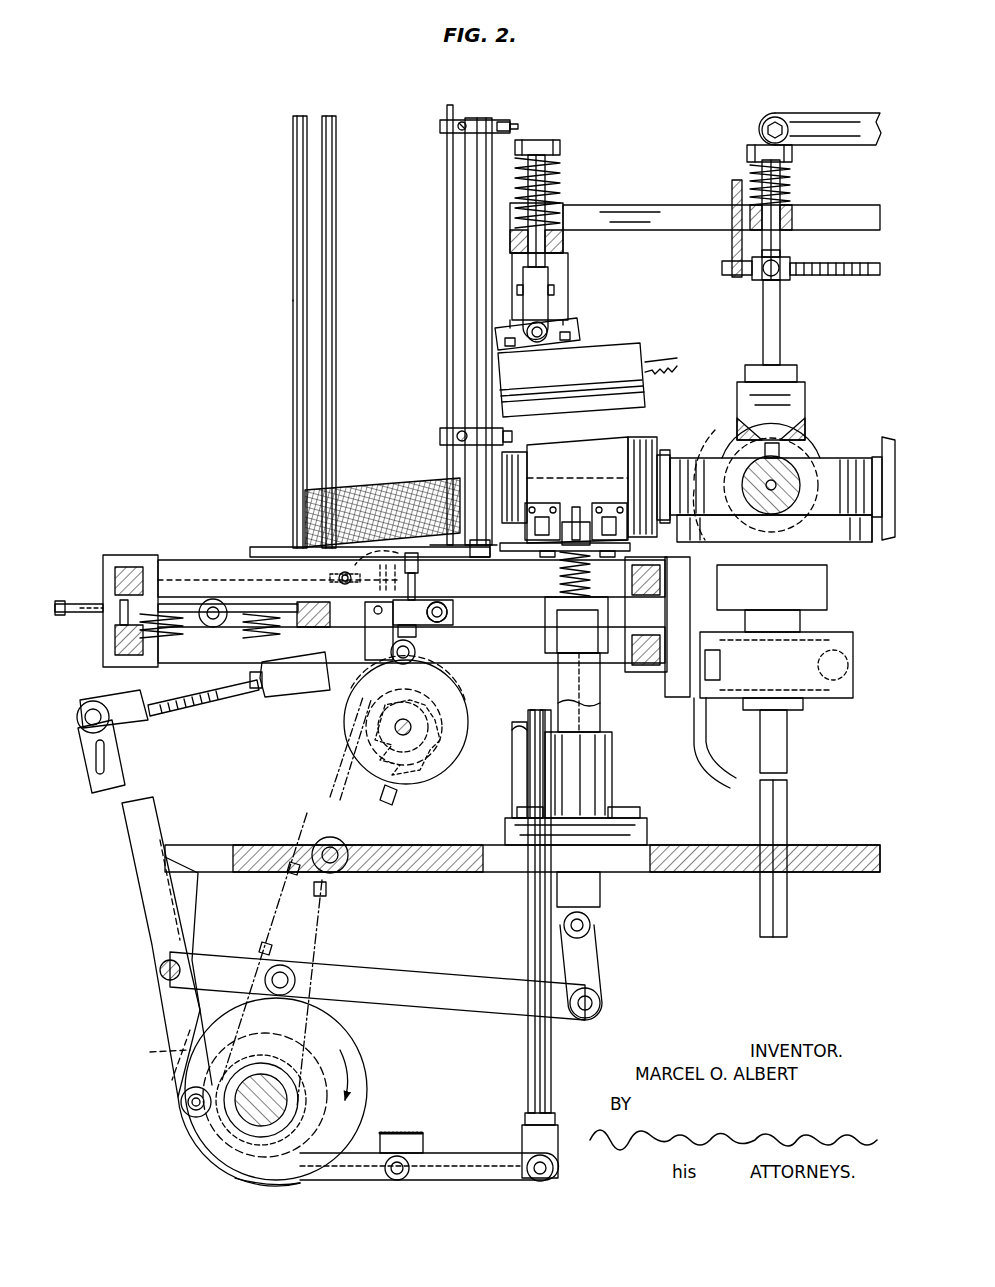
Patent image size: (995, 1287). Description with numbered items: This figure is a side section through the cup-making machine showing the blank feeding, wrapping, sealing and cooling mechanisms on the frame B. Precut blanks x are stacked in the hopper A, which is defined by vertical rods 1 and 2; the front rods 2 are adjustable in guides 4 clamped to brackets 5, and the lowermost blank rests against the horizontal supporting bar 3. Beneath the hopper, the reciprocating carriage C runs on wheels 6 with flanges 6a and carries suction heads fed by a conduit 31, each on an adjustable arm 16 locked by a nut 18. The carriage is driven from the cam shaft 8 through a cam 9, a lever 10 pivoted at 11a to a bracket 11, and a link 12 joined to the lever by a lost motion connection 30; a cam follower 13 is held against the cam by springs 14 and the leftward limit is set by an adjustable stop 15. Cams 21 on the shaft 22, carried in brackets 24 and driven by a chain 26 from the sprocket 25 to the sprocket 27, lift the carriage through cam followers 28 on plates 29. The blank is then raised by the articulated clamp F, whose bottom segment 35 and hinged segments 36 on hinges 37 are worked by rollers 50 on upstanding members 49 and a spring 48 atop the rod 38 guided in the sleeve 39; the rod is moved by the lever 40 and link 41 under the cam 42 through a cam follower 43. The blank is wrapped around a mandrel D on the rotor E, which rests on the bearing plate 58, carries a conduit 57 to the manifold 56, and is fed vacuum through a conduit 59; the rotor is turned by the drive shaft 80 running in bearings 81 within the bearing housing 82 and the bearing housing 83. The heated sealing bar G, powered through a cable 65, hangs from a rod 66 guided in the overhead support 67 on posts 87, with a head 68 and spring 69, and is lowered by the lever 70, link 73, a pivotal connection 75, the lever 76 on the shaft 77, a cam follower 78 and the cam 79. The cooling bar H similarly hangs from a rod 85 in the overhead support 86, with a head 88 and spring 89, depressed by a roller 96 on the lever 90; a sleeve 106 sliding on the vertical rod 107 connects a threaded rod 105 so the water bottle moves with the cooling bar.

The vertically extending rods 1 is at (299, 116).
The hopper A is at (290, 236).
The vertically extending rods 2 is at (447, 257).
The guides 4 is at (440, 126).
The brackets 5 is at (492, 145).
The enlarged head 68 is at (565, 142).
The compressed spring 69 is at (560, 170).
The rod 66 is at (546, 200).
The overhead support 67 is at (565, 243).
The posts 87 is at (549, 274).
The link 70 is at (550, 305).
The heated sealing bar G is at (616, 352).
The cable 65 is at (656, 366).
The lever 90 is at (820, 116).
The roller 96 is at (770, 118).
The enlarged head 88 is at (747, 152).
The compressed spring 89 is at (790, 178).
The rod 85 is at (784, 204).
The overhead support 86 is at (660, 210).
The sleeve 106 is at (786, 278).
The threaded rod 105 is at (838, 276).
The vertical rod 107 is at (782, 320).
The water-cooled bar H is at (805, 392).
The rotating mandrel support E is at (861, 458).
The frusto-conical mandrel D is at (758, 440).
The manifold 56 is at (771, 490).
The conduit 57 is at (698, 478).
The stationary bearing plate 58 is at (860, 545).
The articulated clamp F is at (580, 440).
The pivotal segments 36 is at (620, 458).
The hinges 37 is at (612, 508).
The roller 50 is at (572, 506).
The intermediate bottom segment 35 is at (528, 550).
The upstanding members 49 is at (558, 560).
The compressed spring 48 is at (593, 590).
The nut 18 is at (455, 613).
The wheels 6 is at (440, 628).
The plates 29 is at (365, 642).
The adjustable arm 16 is at (392, 660).
The cams 21 is at (430, 782).
The cam followers 28 is at (432, 690).
The conduit 31 is at (396, 718).
The rotatable shaft 22 is at (385, 720).
The depending brackets 24 is at (354, 745).
The sprocket 27 is at (374, 789).
The link 12 is at (190, 695).
The lost motion pin and slot connection 30 is at (122, 730).
The reciprocating carriage C is at (292, 630).
The extended springs 14 is at (182, 636).
The adjustable stop 15 is at (202, 600).
The enlarged flanges 6a is at (213, 598).
The frame B is at (120, 555).
The horizontal supporting bar 3 is at (455, 545).
The precut blanks x is at (362, 488).
The rod 38 is at (600, 718).
The sleeve 39 is at (613, 780).
The link 73 is at (551, 1058).
The pivotal connection 75 is at (553, 1166).
The cam-actuated lever 76 is at (480, 1152).
The shaft 77 is at (405, 1158).
The link 41 is at (600, 972).
The cam-actuated lever 40 is at (400, 977).
The cam follower 43 is at (283, 966).
The chain 26 is at (320, 935).
The cam 9 is at (366, 1080).
The driven cam shaft 8 is at (252, 1110).
The sprocket 25 is at (283, 1048).
The cam 42 is at (192, 1125).
The cam follower 78 is at (240, 1180).
The cam follower 13 is at (181, 1103).
The cam 79 is at (158, 1051).
The pivot 11a is at (162, 975).
The lever 10 is at (138, 893).
The bracket 11 is at (186, 907).
The bearing housing 83 is at (827, 598).
The bearings 81 is at (805, 692).
The bearing housing 82 is at (850, 692).
The drive shaft 80 is at (787, 820).
The conduit 59 is at (718, 784).